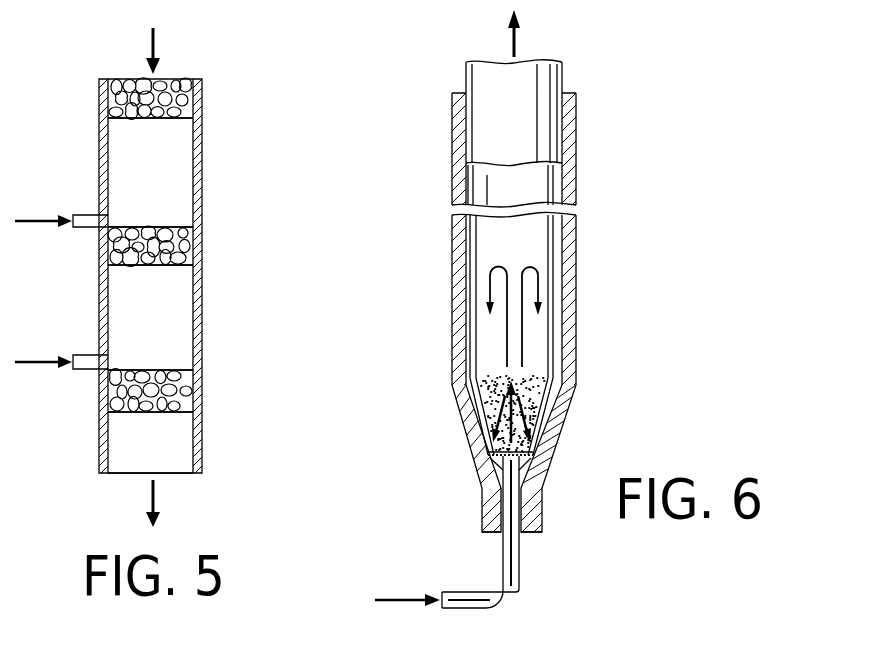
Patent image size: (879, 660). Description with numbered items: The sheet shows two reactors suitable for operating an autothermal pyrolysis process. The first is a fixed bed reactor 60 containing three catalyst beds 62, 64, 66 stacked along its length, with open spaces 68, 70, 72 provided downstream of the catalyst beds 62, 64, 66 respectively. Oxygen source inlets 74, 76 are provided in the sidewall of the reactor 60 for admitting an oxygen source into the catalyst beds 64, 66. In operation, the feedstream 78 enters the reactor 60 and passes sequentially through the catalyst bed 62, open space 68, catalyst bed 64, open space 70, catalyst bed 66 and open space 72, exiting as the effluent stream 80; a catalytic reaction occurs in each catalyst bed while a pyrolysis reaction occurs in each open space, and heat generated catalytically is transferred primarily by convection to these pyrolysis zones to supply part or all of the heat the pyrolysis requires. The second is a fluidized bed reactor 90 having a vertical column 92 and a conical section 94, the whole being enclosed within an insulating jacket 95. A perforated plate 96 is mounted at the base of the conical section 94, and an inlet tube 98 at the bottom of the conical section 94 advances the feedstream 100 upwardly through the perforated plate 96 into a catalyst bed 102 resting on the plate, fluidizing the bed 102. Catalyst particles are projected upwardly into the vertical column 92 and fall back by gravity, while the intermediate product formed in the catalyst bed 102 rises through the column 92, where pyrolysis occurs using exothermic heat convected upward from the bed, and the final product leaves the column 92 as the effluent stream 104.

In FIG. 5, the fixed bed reactor 60 is at (202, 127).
In FIG. 5, the catalyst bed 62 is at (202, 88).
In FIG. 5, the catalyst bed 64 is at (180, 243).
In FIG. 5, the catalyst bed 66 is at (180, 392).
In FIG. 5, the open space 68 is at (180, 175).
In FIG. 5, the open space 70 is at (180, 298).
In FIG. 5, the open space 72 is at (175, 443).
In FIG. 5, the oxygen source inlet 74 is at (88, 214).
In FIG. 5, the oxygen source inlet 76 is at (88, 354).
In FIG. 5, the feedstream 78 is at (155, 42).
In FIG. 5, the effluent stream 80 is at (157, 490).
In FIG. 6, the fluidized bed reactor 90 is at (592, 295).
In FIG. 6, the vertical column 92 is at (577, 237).
In FIG. 6, the conical section 94 is at (548, 430).
In FIG. 6, the insulating jacket 95 is at (577, 127).
In FIG. 6, the perforated plate 96 is at (542, 488).
In FIG. 6, the inlet tube 98 is at (520, 562).
In FIG. 6, the feedstream 100 is at (397, 596).
In FIG. 6, the catalyst bed 102 is at (548, 381).
In FIG. 6, the effluent stream 104 is at (516, 42).